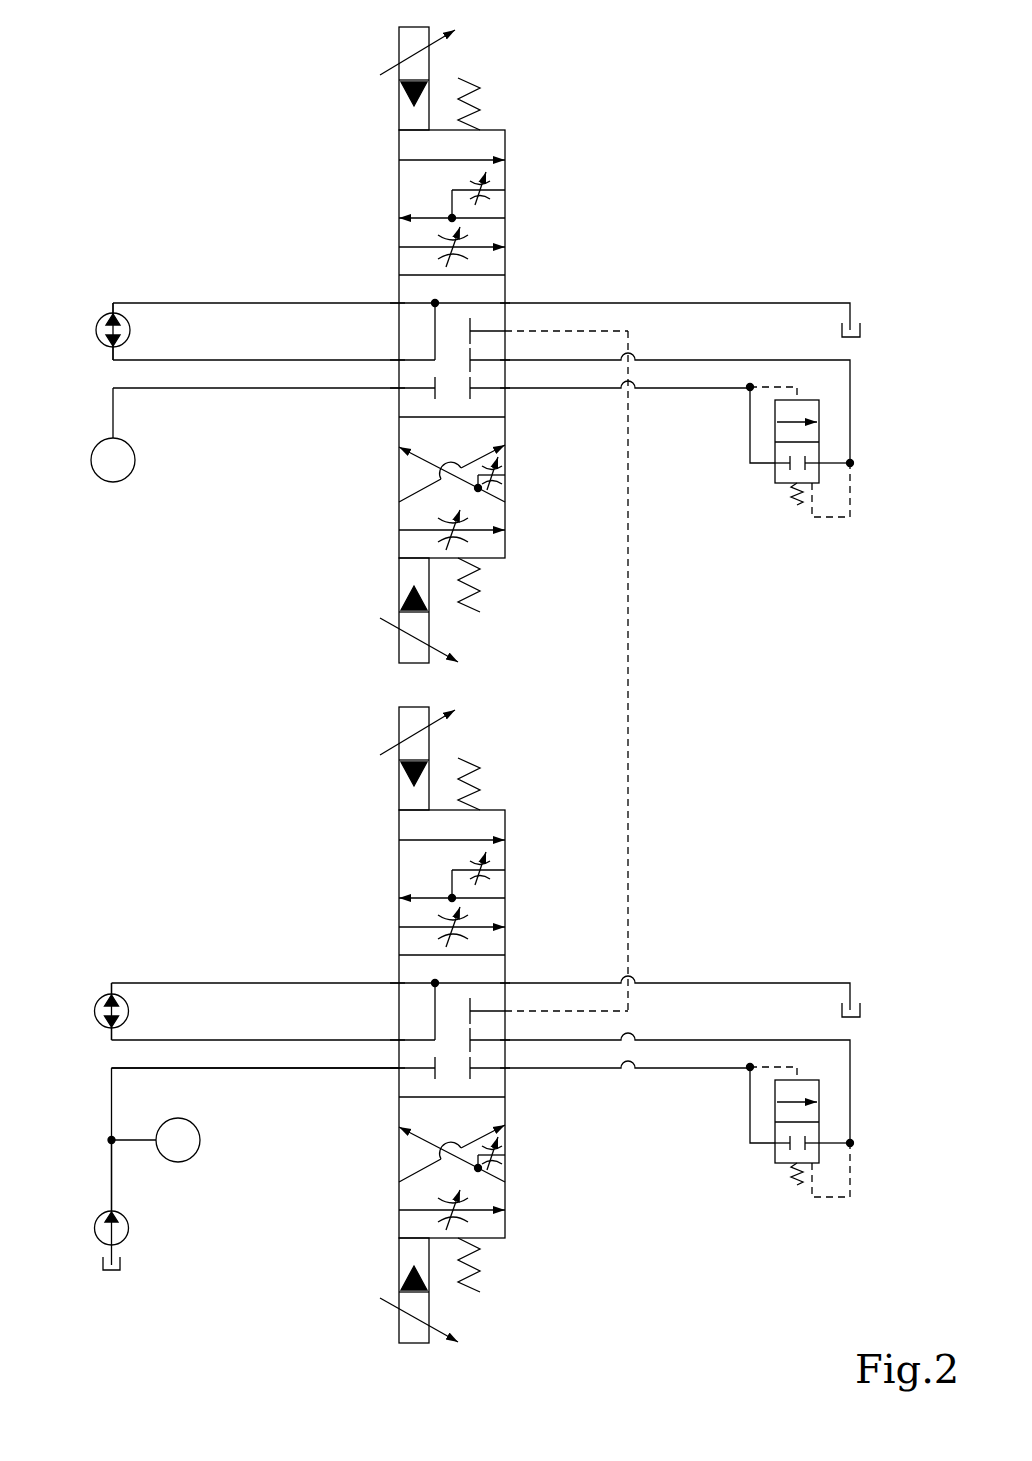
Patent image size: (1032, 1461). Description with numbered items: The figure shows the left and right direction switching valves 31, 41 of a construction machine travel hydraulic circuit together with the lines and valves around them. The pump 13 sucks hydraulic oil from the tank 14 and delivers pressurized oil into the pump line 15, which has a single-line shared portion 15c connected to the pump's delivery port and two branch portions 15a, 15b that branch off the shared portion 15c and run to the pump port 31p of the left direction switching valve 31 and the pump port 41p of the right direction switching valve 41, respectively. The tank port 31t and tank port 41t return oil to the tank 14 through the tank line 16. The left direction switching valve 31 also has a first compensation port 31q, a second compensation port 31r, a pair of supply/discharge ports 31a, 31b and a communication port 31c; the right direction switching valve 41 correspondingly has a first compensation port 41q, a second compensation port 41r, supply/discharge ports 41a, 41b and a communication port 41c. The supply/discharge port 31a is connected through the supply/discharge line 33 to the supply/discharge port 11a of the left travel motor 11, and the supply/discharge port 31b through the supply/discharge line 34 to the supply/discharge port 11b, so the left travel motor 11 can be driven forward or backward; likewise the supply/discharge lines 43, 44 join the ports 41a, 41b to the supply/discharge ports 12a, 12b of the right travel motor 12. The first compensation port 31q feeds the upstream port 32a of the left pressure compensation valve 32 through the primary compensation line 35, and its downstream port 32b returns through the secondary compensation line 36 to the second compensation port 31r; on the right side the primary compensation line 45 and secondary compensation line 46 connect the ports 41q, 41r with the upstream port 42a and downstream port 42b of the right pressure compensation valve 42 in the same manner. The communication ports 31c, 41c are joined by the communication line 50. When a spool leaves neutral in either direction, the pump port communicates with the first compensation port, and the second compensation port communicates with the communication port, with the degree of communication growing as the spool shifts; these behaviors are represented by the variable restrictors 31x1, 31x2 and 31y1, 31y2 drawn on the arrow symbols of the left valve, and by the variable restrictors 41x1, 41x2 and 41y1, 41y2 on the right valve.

The left travel motor 11 is at (98, 1003).
The supply/discharge port 11a is at (111, 996).
The supply/discharge port 11b is at (106, 1026).
The right travel motor 12 is at (100, 322).
The supply/discharge port 12a is at (113, 315).
The supply/discharge port 12b is at (108, 345).
The pump 13 is at (128, 1228).
The tank 14 is at (862, 330).
The pump line 15 is at (100, 1092).
The branch portion 15a is at (210, 1070).
The branch portion 15b is at (175, 390).
The shared portion 15c is at (111, 1173).
The tank line 16 is at (750, 303).
The left direction switching valve 31 is at (507, 1240).
The supply/discharge port 31a is at (399, 983).
The supply/discharge port 31b is at (399, 1038).
The communication port 31c is at (505, 1010).
The pump port 31p is at (399, 1072).
The first compensation port 31q is at (507, 1082).
The second compensation port 31r is at (505, 1042).
The tank port 31t is at (505, 982).
The variable restrictor 31x1 is at (462, 1220).
The variable restrictor 31x2 is at (440, 940).
The variable restrictor 31y1 is at (500, 1170).
The variable restrictor 31y2 is at (492, 853).
The left pressure compensation valve 32 is at (775, 1163).
The upstream port 32a is at (775, 1143).
The downstream port 32b is at (819, 1143).
The supply/discharge line 33 is at (180, 983).
The supply/discharge line 34 is at (203, 1040).
The primary compensation line 35 is at (700, 1068).
The secondary compensation line 36 is at (852, 1068).
The right direction switching valve 41 is at (507, 560).
The supply/discharge port 41a is at (399, 303).
The supply/discharge port 41b is at (399, 358).
The communication port 41c is at (505, 330).
The pump port 41p is at (399, 392).
The first compensation port 41q is at (507, 402).
The second compensation port 41r is at (505, 362).
The tank port 41t is at (505, 302).
The variable restrictor 41x1 is at (462, 540).
The variable restrictor 41x2 is at (440, 260).
The variable restrictor 41y1 is at (500, 490).
The variable restrictor 41y2 is at (492, 173).
The right pressure compensation valve 42 is at (775, 483).
The upstream port 42a is at (775, 463).
The downstream port 42b is at (819, 463).
The supply/discharge line 43 is at (182, 303).
The supply/discharge line 44 is at (205, 360).
The primary compensation line 45 is at (700, 388).
The secondary compensation line 46 is at (852, 388).
The communication line 50 is at (630, 660).